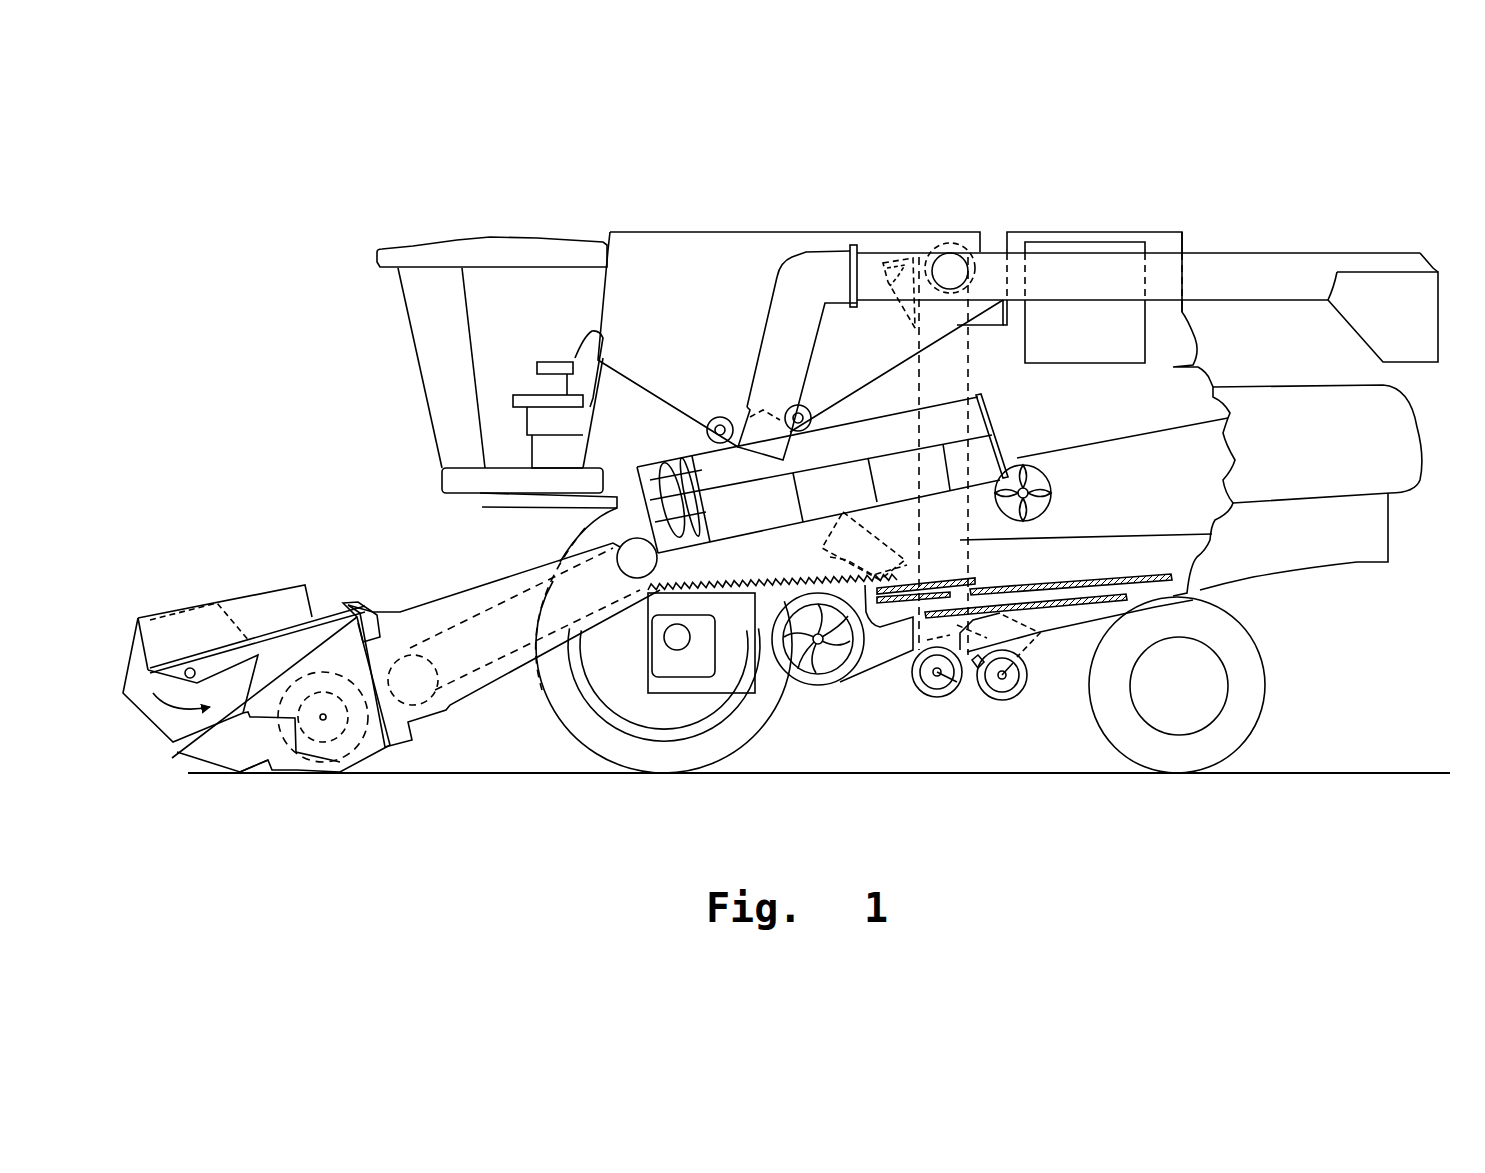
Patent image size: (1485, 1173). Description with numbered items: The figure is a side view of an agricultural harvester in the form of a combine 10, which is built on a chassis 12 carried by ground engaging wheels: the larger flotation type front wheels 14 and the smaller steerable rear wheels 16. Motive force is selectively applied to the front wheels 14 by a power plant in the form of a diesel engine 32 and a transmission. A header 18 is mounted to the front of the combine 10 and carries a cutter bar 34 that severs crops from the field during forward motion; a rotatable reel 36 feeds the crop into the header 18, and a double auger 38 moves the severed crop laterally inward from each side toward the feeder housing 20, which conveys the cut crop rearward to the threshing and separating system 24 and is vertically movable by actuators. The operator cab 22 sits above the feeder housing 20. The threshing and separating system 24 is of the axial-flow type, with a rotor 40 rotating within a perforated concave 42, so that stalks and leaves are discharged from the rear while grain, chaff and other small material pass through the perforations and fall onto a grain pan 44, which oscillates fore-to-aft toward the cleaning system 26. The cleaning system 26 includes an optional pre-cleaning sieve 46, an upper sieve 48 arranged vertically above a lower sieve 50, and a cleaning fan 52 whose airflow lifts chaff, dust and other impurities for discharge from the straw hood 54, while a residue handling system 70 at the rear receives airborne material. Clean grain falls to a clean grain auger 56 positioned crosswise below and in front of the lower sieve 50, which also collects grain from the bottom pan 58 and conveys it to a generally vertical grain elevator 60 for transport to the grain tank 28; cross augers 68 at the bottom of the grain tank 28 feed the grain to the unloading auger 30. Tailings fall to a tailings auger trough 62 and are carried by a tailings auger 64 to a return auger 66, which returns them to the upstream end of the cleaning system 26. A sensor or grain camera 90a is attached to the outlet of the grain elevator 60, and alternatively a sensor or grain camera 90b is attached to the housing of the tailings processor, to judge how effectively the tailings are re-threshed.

The combine 10 is at (484, 218).
The chassis 12 is at (1199, 601).
The front wheels 14 is at (573, 727).
The rear wheels 16 is at (1262, 710).
The header 18 is at (228, 583).
The feeder housing 20 is at (457, 590).
The operator cab 22 is at (415, 345).
The threshing and separating system 24 is at (578, 518).
The cleaning system 26 is at (887, 700).
The grain tank 28 is at (667, 238).
The unloading auger 30 is at (1279, 262).
The diesel engine 32 is at (1072, 245).
The cutter bar 34 is at (242, 773).
The rotatable reel 36 is at (130, 660).
The double auger 38 is at (325, 740).
The rotor 40 is at (667, 477).
The perforated concave 42 is at (863, 447).
The grain pan 44 is at (658, 590).
The pre-cleaning sieve 46 is at (977, 577).
The upper sieve 48 is at (1090, 577).
The lower sieve 50 is at (1053, 612).
The cleaning fan 52 is at (810, 685).
The straw hood 54 is at (1399, 430).
The clean grain auger 56 is at (948, 677).
The bottom pan 58 is at (1085, 620).
The grain elevator 60 is at (970, 370).
The tailings auger trough 62 is at (1093, 623).
The tailings auger 64 is at (992, 700).
The return auger 66 is at (900, 560).
The cross augers 68 is at (718, 418).
The residue handling system 70 is at (1354, 575).
The sensor or grain camera 90a is at (893, 262).
The sensor or grain camera 90b is at (977, 664).